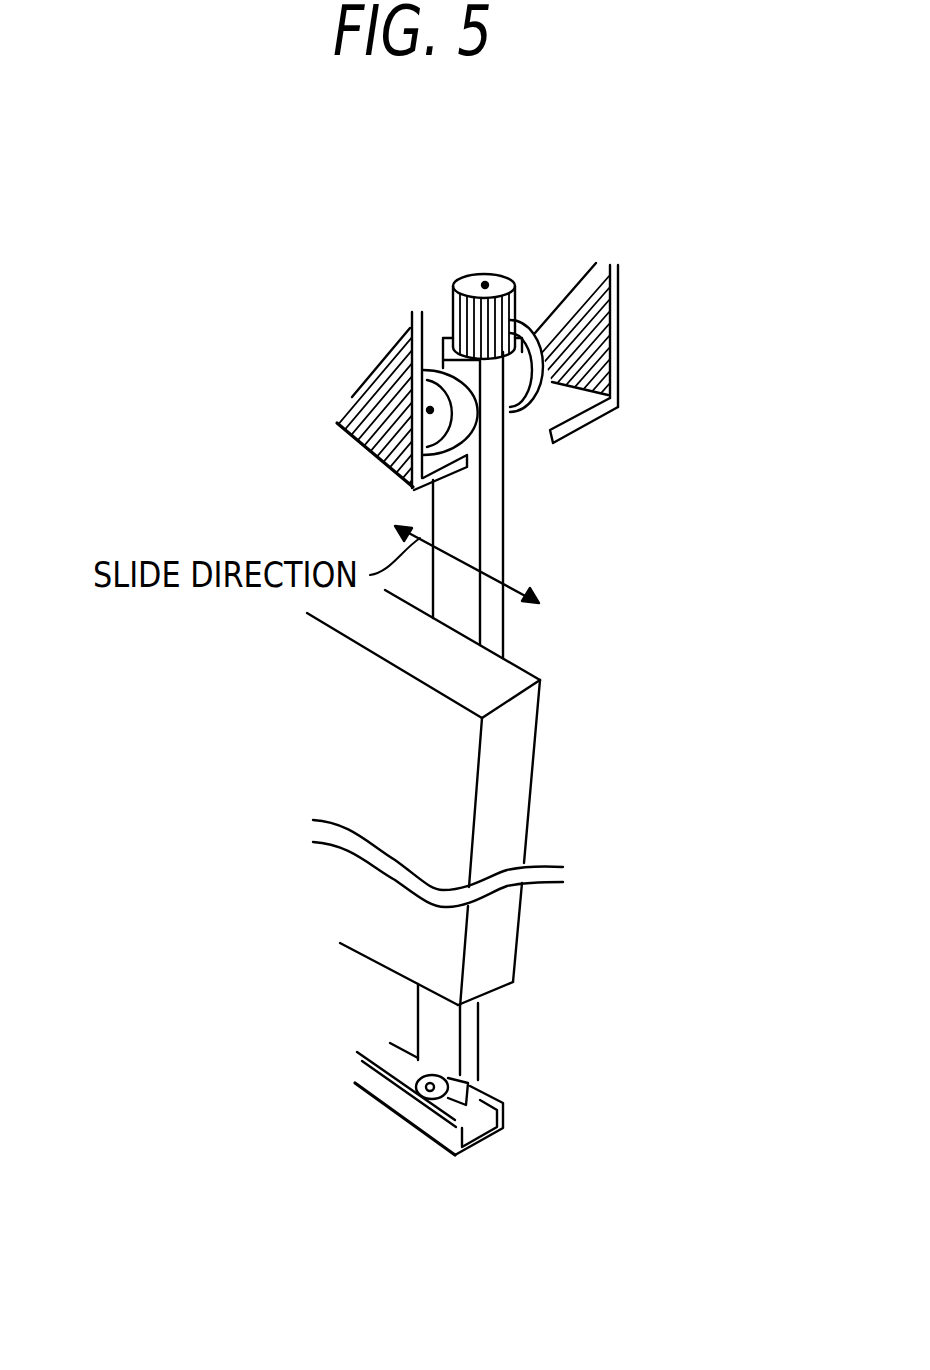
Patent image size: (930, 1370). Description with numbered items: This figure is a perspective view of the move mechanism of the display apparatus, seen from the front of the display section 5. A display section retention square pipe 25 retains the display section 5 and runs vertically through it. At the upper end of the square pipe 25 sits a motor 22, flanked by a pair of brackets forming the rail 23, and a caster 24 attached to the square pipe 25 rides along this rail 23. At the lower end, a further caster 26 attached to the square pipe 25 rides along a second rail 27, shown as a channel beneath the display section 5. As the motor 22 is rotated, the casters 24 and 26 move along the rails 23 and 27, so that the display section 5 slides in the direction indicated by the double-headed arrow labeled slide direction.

The display section 5 is at (537, 770).
The motor 22 is at (486, 268).
The rail 23 is at (362, 365).
The caster 24 is at (583, 410).
The display section retention square pipe 25 is at (508, 505).
The caster 26 is at (478, 1083).
The rail 27 is at (493, 1142).